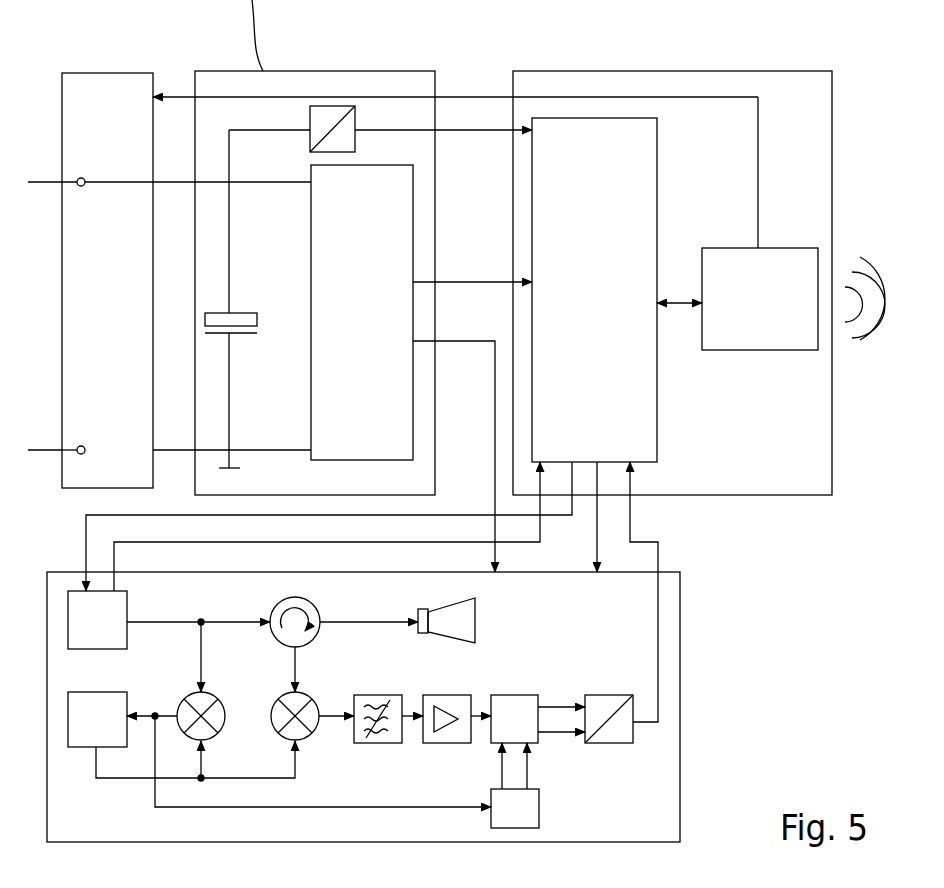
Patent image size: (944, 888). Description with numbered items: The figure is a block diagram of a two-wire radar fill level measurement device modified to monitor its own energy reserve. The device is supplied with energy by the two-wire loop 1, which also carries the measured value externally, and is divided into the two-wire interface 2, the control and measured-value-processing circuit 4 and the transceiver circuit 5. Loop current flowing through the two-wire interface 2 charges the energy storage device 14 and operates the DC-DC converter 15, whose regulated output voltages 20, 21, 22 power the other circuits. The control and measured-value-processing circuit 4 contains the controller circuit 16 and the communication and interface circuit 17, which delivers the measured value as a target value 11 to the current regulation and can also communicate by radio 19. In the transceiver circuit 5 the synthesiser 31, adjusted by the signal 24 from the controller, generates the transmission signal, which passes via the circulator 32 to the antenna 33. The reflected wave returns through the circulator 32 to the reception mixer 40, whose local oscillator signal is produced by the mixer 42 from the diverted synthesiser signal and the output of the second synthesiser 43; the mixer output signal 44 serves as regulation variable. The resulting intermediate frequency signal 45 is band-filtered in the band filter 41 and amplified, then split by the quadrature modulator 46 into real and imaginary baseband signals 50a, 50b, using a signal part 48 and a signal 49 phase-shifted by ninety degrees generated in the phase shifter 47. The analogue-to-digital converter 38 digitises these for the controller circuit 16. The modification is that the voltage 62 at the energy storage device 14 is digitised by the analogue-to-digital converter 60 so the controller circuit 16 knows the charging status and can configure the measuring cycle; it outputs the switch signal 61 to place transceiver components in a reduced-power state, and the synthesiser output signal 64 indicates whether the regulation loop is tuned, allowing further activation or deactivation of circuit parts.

The two-wire loop 1 is at (43, 183).
The two-wire interface 2 is at (95, 88).
The control and measured-value-processing circuit 4 is at (650, 97).
The transceiver circuit 5 is at (376, 707).
The target value 11 is at (208, 97).
The energy storage device 14 is at (257, 320).
The DC-DC converter 15 is at (342, 447).
The controller circuit 16 is at (657, 412).
The communication and interface circuit 17 is at (785, 350).
The radio channel 19 is at (872, 338).
The regulated output voltage 20 is at (463, 130).
The regulated output voltage 21 is at (460, 282).
The regulated output voltage 22 is at (476, 341).
The signal 24 is at (85, 563).
The synthesiser 31 is at (97, 620).
The circulator or directional coupler 32 is at (275, 607).
The antenna 33 is at (468, 618).
The analogue-to-digital converter 38 is at (628, 745).
The reception mixer 40 is at (312, 728).
The band filter 41 is at (380, 700).
The mixer 42 is at (222, 712).
The second synthesiser 43 is at (97, 719).
The mixer output signal 44 is at (175, 715).
The intermediate frequency signal 45 is at (318, 712).
The quadrature modulator 46 is at (514, 719).
The phase shifter 47 is at (515, 808).
The signal part 48 is at (499, 780).
The phase-shifted signal 49 is at (527, 768).
The baseband signal 50a is at (561, 692).
The baseband signal 50b is at (561, 750).
The analogue-to-digital converter 60 is at (340, 105).
The switch signal 61 is at (595, 507).
The storage device voltage 62 is at (280, 130).
The synthesiser output signal 64 is at (443, 542).